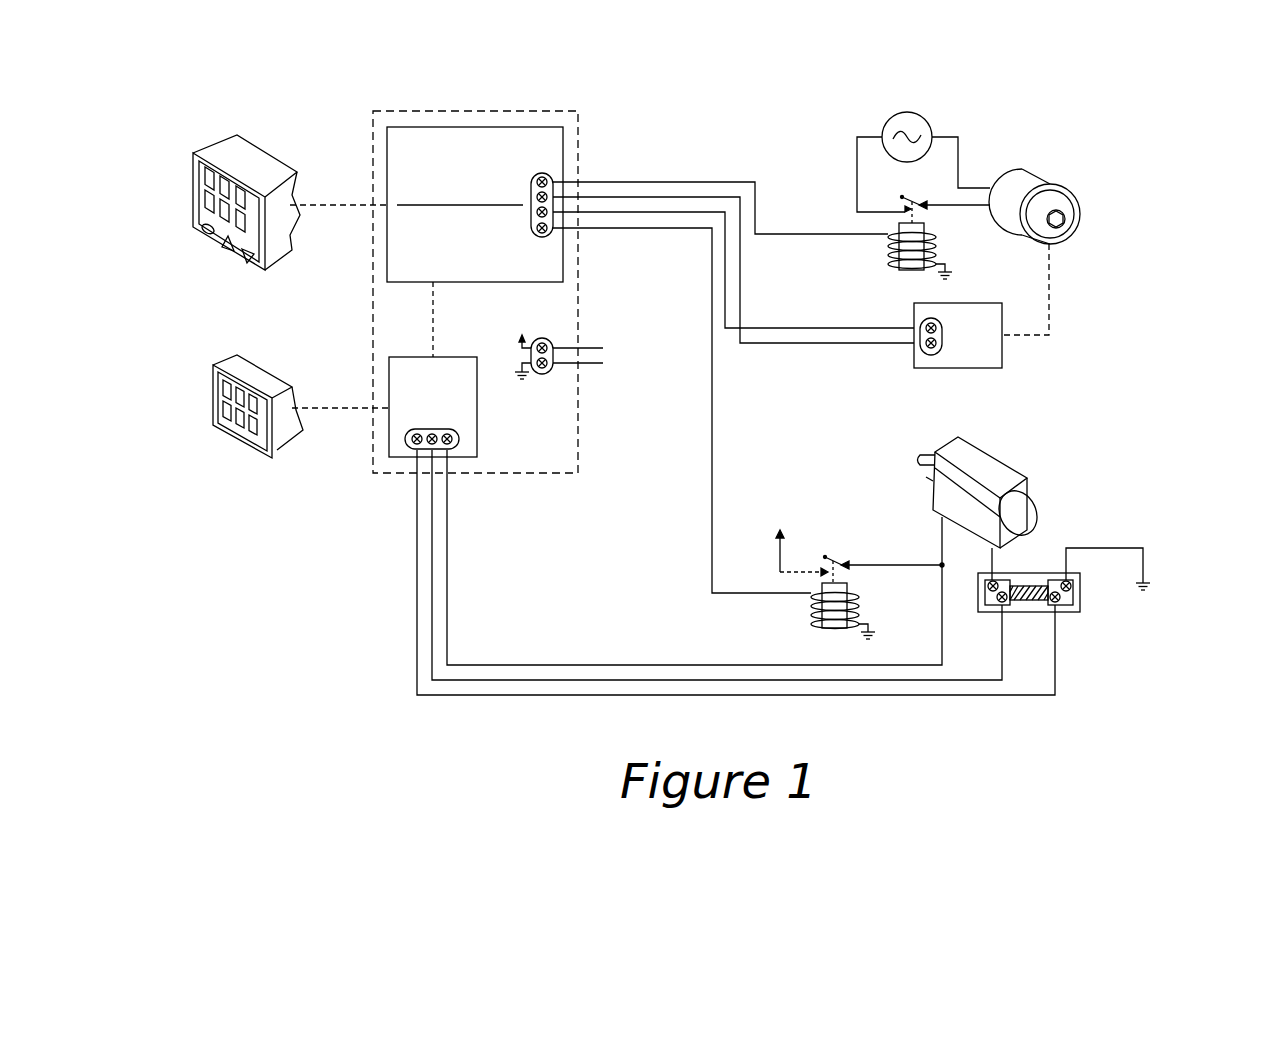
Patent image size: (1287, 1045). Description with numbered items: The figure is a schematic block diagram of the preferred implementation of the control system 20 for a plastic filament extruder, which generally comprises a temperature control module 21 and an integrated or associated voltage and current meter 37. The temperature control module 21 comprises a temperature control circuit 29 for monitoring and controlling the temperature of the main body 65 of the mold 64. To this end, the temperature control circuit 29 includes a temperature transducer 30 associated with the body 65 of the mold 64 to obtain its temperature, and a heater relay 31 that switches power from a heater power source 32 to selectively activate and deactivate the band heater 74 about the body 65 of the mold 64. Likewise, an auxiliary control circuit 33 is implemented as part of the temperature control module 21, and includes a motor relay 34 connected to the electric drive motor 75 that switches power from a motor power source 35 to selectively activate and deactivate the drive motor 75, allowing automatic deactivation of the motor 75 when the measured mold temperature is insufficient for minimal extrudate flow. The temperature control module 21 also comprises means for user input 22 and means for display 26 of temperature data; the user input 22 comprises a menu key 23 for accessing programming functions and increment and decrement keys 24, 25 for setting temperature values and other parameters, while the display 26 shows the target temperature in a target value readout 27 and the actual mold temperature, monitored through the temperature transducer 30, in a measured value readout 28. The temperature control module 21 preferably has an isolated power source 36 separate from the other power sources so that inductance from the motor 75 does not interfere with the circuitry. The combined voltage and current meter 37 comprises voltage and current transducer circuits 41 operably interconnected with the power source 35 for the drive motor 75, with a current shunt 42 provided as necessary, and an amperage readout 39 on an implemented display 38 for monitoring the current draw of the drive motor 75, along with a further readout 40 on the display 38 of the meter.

The control system 20 is at (293, 600).
The temperature control module 21 is at (343, 112).
The means for user input 22 is at (193, 252).
The menu key 23 is at (200, 230).
The increment key 24 is at (222, 252).
The decrement key 25 is at (252, 252).
The means for display 26 is at (186, 177).
The target value readout 27 is at (228, 195).
The measured value readout 28 is at (215, 205).
The temperature control circuit 29 is at (467, 127).
The temperature transducer 30 is at (977, 368).
The heater relay 31 is at (887, 258).
The heater power source 32 is at (908, 115).
The auxiliary control circuit 33 is at (537, 258).
The motor relay 34 is at (812, 610).
The motor power source 35 is at (790, 502).
The isolated power source 36 is at (630, 375).
The voltage and current meter 37 is at (471, 495).
The display 38 is at (222, 445).
The amperage readout 39 is at (233, 400).
The meter display digit 40 is at (262, 432).
The voltage and current transducer circuits 41 is at (467, 398).
The current shunt 42 is at (1062, 612).
The mold 64 is at (1104, 182).
The main body 65 is at (1068, 207).
The band heater 74 is at (1037, 175).
The electric drive motor 75 is at (1000, 478).